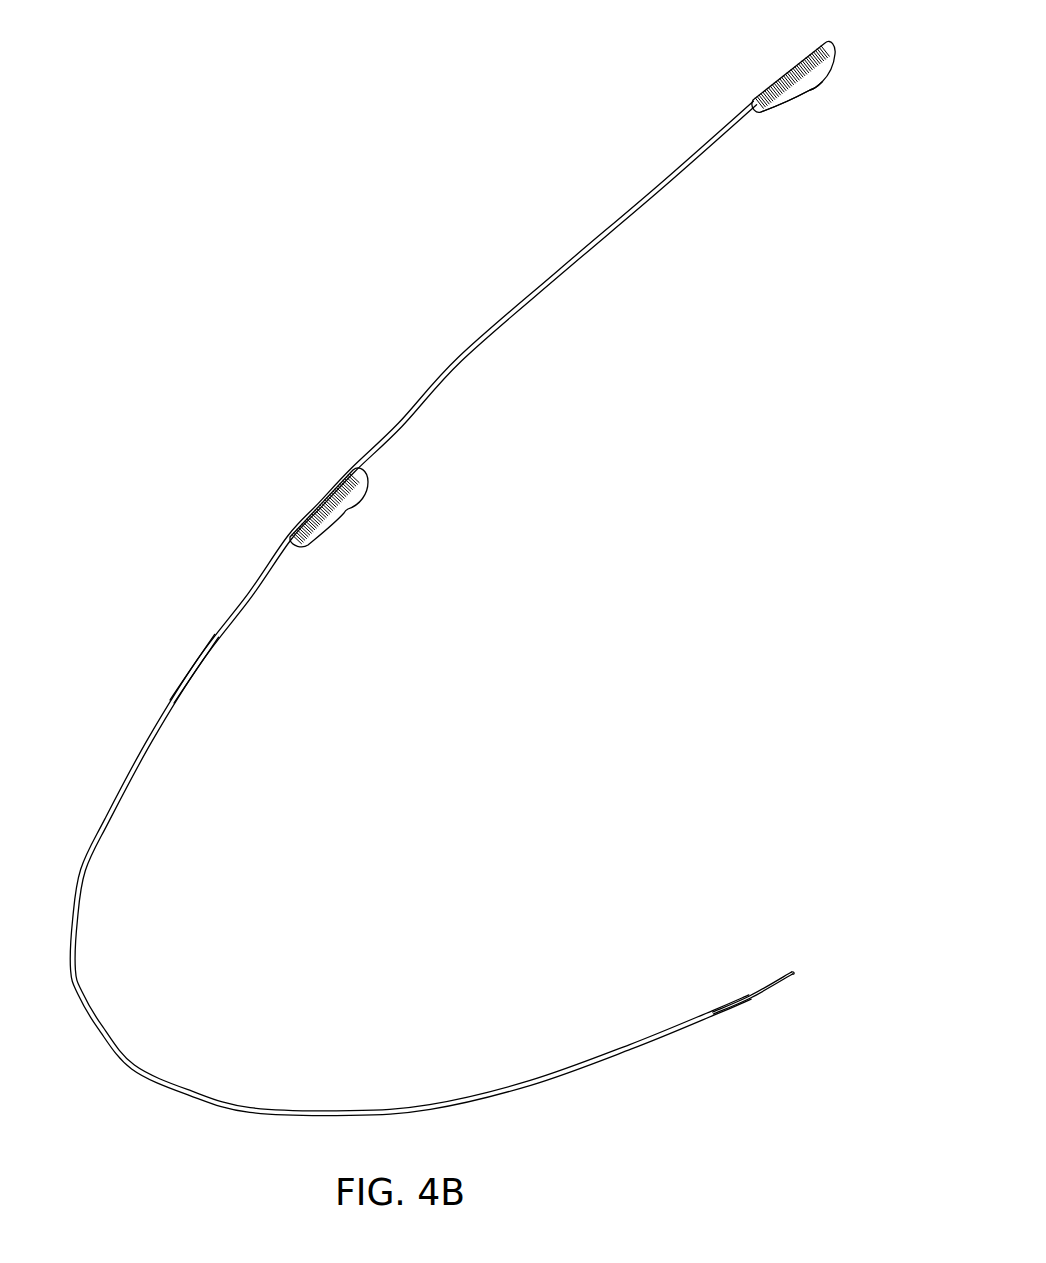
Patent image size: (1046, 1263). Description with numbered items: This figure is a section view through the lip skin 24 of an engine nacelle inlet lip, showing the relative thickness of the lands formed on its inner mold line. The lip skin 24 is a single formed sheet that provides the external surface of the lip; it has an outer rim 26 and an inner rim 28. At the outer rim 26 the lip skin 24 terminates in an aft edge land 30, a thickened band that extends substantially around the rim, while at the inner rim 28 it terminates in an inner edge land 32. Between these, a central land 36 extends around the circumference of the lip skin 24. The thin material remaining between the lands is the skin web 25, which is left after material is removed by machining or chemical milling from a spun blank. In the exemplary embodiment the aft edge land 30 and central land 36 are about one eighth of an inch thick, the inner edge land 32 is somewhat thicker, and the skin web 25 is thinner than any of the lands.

The lip skin 24 is at (283, 554).
The skin web 25 is at (200, 662).
The outer rim 26 is at (820, 43).
The inner rim 28 is at (797, 977).
The aft edge land 30 is at (808, 92).
The inner edge land 32 is at (742, 990).
The central land 36 is at (348, 520).